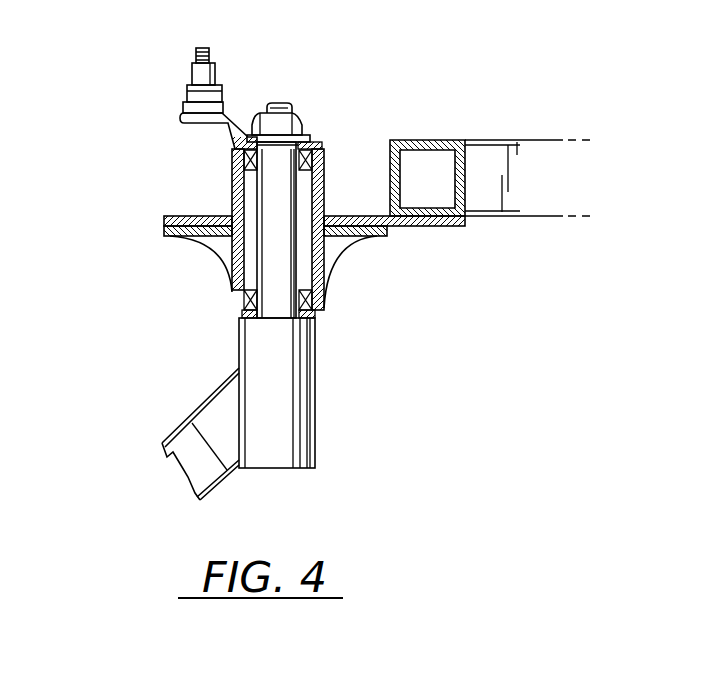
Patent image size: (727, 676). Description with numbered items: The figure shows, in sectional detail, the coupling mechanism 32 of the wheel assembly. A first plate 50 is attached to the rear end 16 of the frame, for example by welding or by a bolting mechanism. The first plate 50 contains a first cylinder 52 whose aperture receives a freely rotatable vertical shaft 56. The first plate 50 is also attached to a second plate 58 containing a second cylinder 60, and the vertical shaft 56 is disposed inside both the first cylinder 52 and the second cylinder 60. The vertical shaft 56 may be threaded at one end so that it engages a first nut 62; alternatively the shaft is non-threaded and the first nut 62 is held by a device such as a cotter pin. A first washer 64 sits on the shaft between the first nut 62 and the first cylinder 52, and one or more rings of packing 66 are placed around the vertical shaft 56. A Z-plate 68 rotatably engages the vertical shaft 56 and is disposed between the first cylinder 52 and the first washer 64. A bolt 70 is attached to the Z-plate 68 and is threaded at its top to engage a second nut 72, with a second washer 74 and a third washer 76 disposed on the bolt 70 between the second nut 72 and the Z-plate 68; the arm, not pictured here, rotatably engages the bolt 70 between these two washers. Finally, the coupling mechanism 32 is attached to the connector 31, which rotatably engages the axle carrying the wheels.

The rear end 16 is at (538, 153).
The connector 31 is at (207, 415).
The coupling mechanism 32 is at (265, 176).
The first plate 50 is at (343, 217).
The first cylinder 52 is at (325, 150).
The vertical shaft 56 is at (267, 222).
The second plate 58 is at (363, 237).
The second cylinder 60 is at (331, 266).
The first nut 62 is at (303, 120).
The first washer 64 is at (313, 142).
The rings of packing 66 is at (247, 157).
The Z-plate 68 is at (195, 118).
The bolt 70 is at (195, 47).
The second nut 72 is at (193, 72).
The second washer 74 is at (192, 90).
The third washer 76 is at (183, 105).